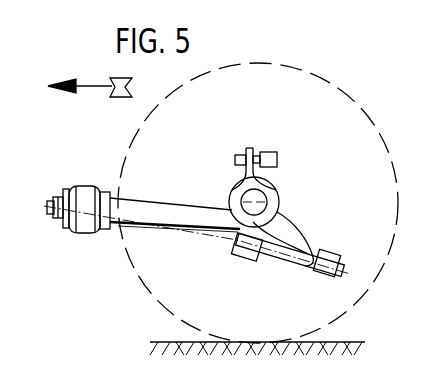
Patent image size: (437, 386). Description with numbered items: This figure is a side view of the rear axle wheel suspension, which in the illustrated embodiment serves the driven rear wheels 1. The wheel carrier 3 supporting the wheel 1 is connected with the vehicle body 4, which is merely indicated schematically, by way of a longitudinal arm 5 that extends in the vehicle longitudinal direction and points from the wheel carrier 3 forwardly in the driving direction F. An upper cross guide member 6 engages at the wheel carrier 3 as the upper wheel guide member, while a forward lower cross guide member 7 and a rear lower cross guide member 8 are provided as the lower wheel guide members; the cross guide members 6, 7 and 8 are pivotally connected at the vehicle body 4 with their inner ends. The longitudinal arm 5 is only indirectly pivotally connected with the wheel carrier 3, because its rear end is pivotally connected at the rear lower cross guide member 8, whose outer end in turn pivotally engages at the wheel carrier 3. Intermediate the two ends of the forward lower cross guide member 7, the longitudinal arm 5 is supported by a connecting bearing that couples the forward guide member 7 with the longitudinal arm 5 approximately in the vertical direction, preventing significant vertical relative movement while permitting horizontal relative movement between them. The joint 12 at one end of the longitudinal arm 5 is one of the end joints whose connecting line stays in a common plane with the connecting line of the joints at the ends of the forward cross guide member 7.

The rear wheel 1 is at (348, 89).
The wheel carrier 3 is at (290, 242).
The vehicle body 4 is at (88, 192).
The longitudinal arm 5 is at (185, 220).
The upper cross guide member 6 is at (265, 150).
The forward lower cross guide member 7 is at (244, 252).
The rear lower cross guide member 8 is at (325, 266).
The joint 12 is at (60, 235).
The driving direction F is at (93, 89).